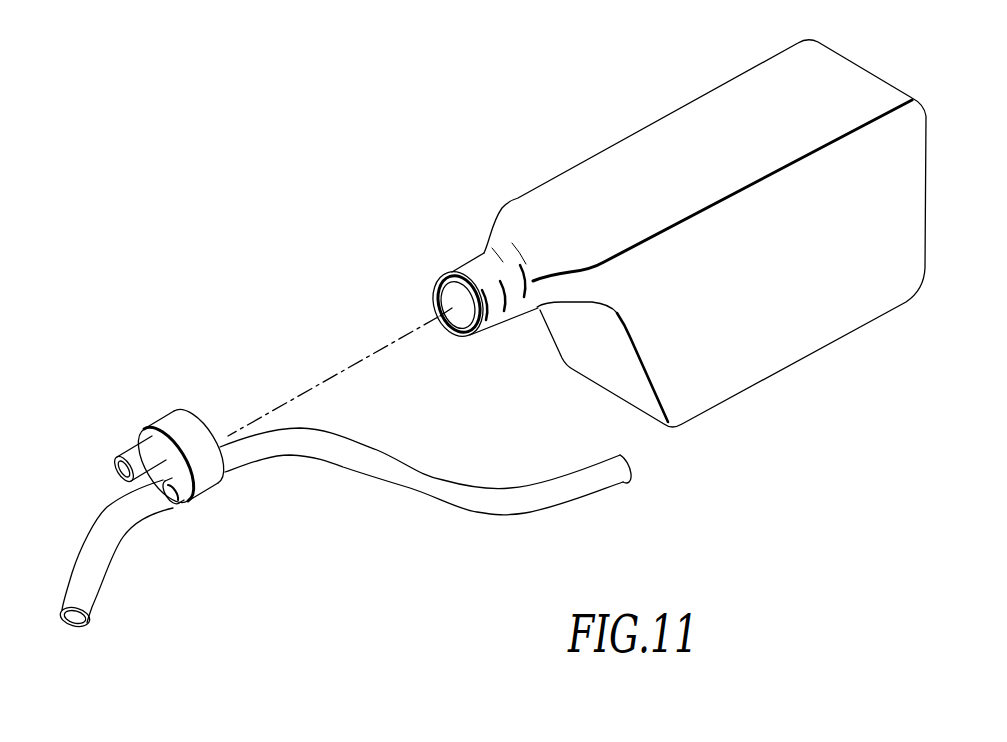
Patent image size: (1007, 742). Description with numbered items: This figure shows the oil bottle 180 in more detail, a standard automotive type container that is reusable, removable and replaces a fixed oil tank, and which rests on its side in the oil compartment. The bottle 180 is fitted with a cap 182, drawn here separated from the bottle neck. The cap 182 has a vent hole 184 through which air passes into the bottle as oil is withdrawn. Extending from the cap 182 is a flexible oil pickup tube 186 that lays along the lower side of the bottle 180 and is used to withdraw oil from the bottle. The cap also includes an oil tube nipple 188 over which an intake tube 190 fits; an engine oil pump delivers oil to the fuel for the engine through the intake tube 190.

The oil bottle 180 is at (640, 130).
The cap 182 is at (178, 426).
The vent hole 184 is at (132, 451).
The flexible oil pickup tube 186 is at (472, 500).
The oil tube nipple 188 is at (180, 500).
The intake tube 190 is at (100, 577).